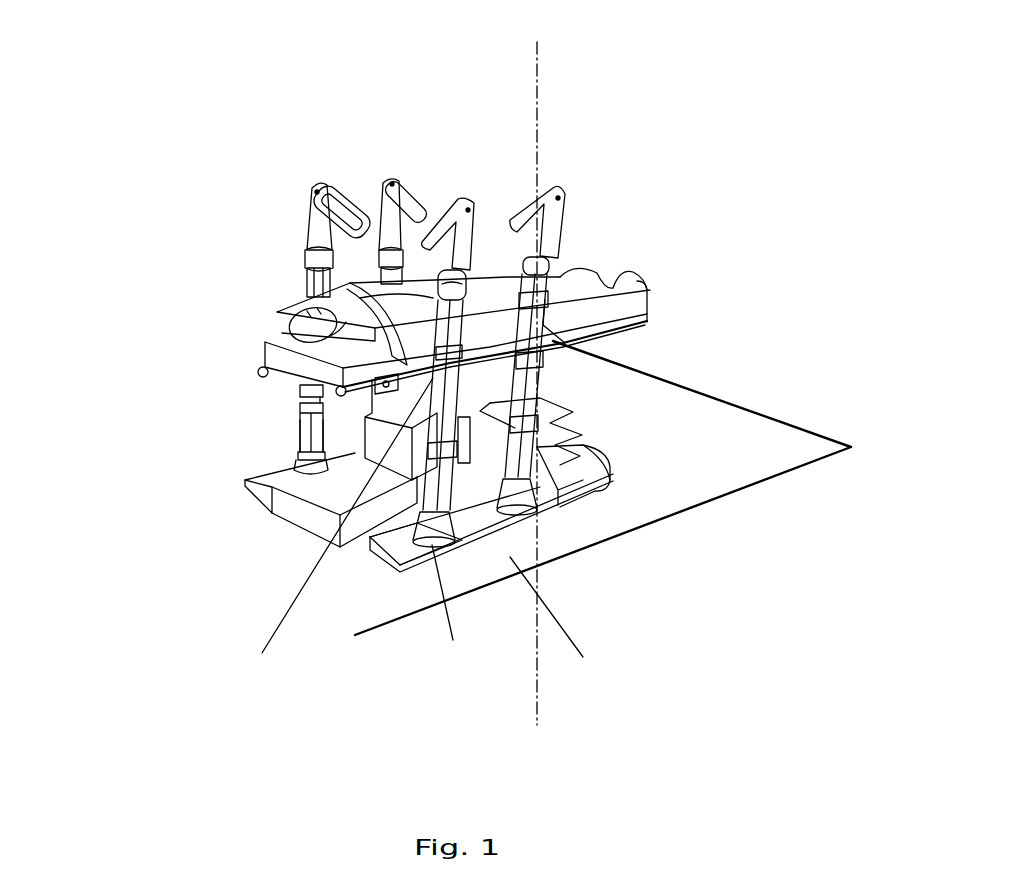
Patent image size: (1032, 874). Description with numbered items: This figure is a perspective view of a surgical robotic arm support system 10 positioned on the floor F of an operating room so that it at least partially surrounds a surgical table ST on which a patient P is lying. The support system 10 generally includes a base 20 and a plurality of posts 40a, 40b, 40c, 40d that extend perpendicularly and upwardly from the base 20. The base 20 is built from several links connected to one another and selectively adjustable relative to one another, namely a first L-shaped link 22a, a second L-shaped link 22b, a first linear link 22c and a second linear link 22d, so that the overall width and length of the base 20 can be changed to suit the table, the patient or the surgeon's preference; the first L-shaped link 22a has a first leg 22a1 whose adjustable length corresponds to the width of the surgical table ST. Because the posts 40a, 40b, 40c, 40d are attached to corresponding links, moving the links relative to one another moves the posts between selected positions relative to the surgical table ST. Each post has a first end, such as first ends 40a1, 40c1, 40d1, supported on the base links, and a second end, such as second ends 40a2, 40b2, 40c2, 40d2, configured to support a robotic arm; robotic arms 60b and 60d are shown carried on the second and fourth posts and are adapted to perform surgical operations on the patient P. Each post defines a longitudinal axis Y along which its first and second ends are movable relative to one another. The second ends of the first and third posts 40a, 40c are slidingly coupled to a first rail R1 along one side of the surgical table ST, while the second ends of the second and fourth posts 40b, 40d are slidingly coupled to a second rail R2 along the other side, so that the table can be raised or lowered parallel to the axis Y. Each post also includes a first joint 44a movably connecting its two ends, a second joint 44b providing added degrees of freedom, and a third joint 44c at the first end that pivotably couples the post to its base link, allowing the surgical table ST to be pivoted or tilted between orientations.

The surgical robotic arm support system 10 is at (659, 358).
The base 20 is at (418, 576).
The first L-shaped link 22a is at (618, 467).
The first leg of first L-shaped link 22a1 is at (585, 450).
The second L-shaped link 22b is at (479, 410).
The first linear link 22c is at (397, 572).
The second linear link 22d is at (262, 475).
The first post 40a is at (534, 458).
The first end of first post 40a1 is at (528, 508).
The second end of first post 40a2 is at (540, 297).
The second post 40b is at (378, 240).
The second end of second post 40b2 is at (405, 280).
The third post 40c is at (431, 514).
The first end of third post 40c1 is at (388, 531).
The second end of third post 40c2 is at (477, 291).
The fourth post 40d is at (300, 412).
The first end of fourth post 40d1 is at (303, 432).
The second end of fourth post 40d2 is at (307, 280).
The first joint 44a is at (334, 529).
The second joint 44b is at (558, 622).
The third joint 44c is at (454, 609).
The robotic arm 60b is at (392, 180).
The robotic arm 60d is at (308, 230).
The patient P is at (580, 297).
The longitudinal axis Y is at (537, 384).
The first rail R1 is at (540, 365).
The second rail R2 is at (262, 370).
The floor F is at (636, 506).
The surgical table ST is at (322, 492).